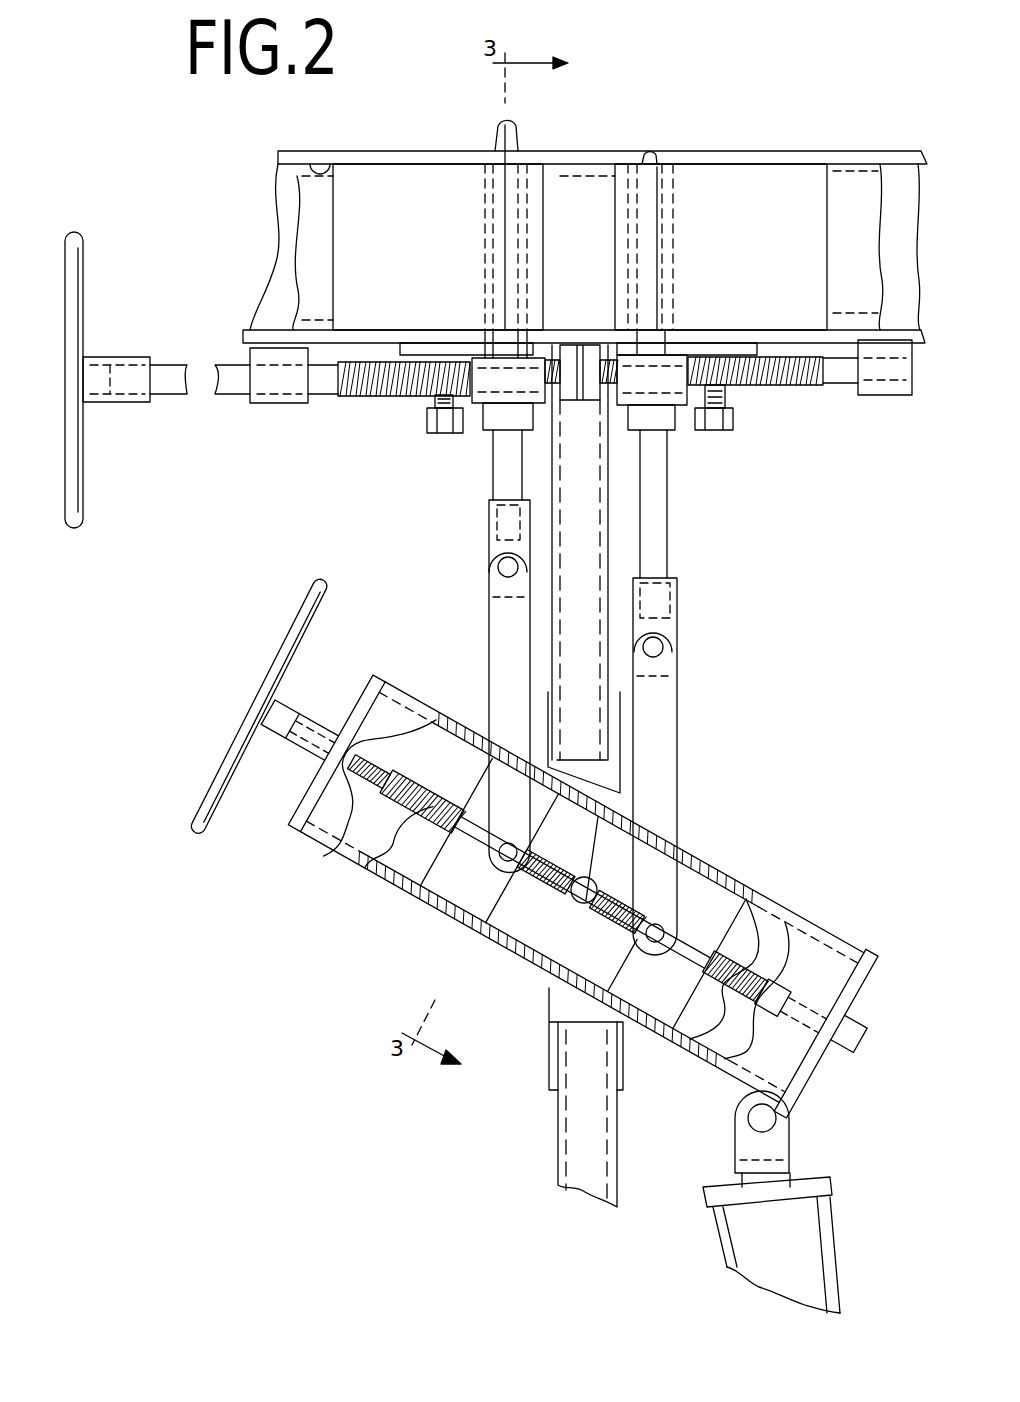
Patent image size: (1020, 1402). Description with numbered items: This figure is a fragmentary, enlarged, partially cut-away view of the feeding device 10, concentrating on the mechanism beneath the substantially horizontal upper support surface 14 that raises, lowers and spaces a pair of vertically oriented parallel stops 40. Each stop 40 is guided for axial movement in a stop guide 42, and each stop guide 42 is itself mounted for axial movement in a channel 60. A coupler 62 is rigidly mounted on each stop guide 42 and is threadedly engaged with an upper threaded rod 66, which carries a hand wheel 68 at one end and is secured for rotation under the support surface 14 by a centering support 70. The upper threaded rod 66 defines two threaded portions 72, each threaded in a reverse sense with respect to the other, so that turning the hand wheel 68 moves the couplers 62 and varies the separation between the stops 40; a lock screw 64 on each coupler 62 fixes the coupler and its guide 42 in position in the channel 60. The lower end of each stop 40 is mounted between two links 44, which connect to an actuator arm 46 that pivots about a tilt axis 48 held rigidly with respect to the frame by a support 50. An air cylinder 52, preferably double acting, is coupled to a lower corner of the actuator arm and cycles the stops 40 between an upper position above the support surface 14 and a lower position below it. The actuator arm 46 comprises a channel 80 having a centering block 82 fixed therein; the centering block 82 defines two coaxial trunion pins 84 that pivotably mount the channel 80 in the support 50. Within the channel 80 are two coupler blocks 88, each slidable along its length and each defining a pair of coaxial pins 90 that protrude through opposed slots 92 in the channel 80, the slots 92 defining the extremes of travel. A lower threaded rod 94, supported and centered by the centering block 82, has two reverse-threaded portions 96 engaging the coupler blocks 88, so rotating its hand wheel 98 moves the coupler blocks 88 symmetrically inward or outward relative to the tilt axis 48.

The feeding device 10 is at (176, 600).
The upper support surface 14 is at (880, 150).
The stops 40 is at (495, 285).
The stop guides 42 is at (399, 232).
The links 44 is at (496, 648).
The actuator arm 46 is at (450, 937).
The tilt axis 48 is at (567, 903).
The support 50 is at (572, 1137).
The air cylinder 52 is at (790, 1233).
The channel 60 is at (322, 164).
The coupler 62 is at (477, 400).
The lock screw 64 is at (430, 420).
The upper threaded rod 66 is at (322, 390).
The hand wheel 68 is at (85, 522).
The centering support 70 is at (573, 385).
The threaded portions 72 is at (370, 390).
The channel 80 is at (710, 862).
The centering block 82 is at (587, 862).
The trunion pins 84 is at (583, 907).
The coupler blocks 88 is at (449, 892).
The pins 90 is at (506, 842).
The slots 92 is at (377, 872).
The lower threaded rod 94 is at (326, 846).
The threaded portions 96 is at (430, 805).
The hand wheel 98 is at (190, 843).